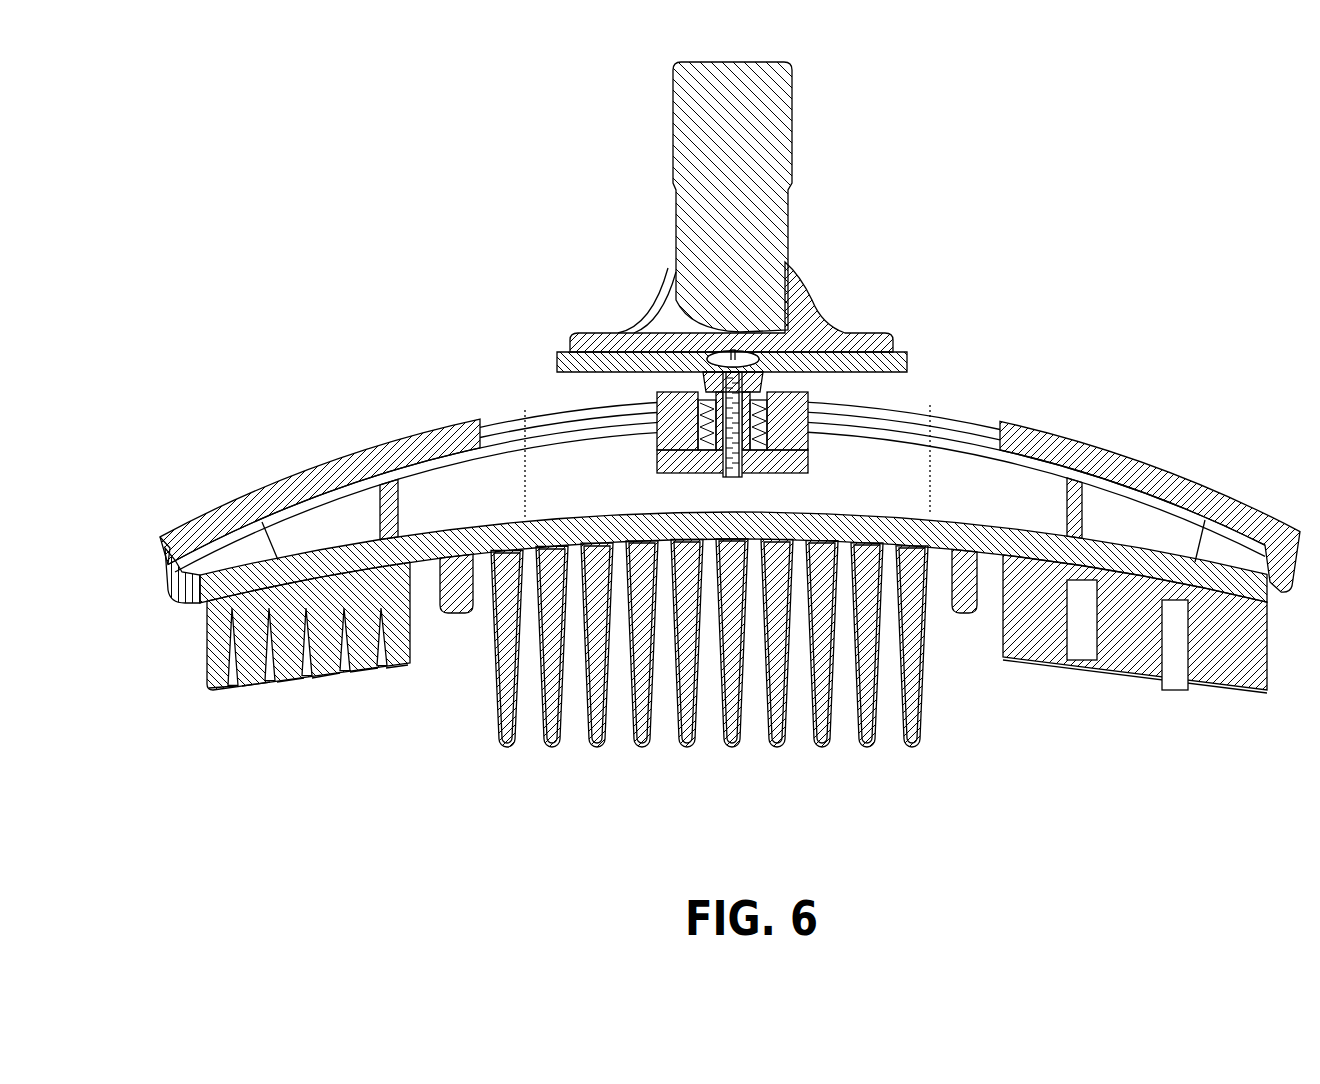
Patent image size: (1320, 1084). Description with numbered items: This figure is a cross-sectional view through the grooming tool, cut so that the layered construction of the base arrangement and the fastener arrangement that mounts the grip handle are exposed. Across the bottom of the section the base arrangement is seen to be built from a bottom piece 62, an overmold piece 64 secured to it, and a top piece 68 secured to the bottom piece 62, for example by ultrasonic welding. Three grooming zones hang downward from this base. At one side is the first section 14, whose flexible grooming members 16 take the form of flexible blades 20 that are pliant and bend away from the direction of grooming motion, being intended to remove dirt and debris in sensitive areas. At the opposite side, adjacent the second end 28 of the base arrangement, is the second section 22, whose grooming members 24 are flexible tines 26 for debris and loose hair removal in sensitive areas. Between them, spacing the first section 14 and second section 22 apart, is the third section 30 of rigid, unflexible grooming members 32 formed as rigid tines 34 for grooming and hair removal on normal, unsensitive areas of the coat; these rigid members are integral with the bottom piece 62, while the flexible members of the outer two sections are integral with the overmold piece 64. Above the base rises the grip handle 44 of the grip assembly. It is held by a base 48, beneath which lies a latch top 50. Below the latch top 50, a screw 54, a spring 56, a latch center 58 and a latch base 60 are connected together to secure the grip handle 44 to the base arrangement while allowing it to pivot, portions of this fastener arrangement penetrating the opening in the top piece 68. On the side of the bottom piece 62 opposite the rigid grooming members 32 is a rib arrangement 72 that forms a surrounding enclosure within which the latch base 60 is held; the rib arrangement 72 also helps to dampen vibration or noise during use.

The first section 14 is at (1145, 687).
The grooming members 16 is at (1045, 672).
The flexible blades 20 is at (1049, 661).
The second section 22 is at (320, 709).
The grooming members 24 is at (218, 692).
The flexible tines 26 is at (404, 672).
The second end 28 is at (160, 540).
The third section 30 is at (713, 689).
The grooming members 32 is at (777, 748).
The rigid tines 34 is at (867, 748).
The grip handle 44 is at (683, 143).
The base 48 is at (868, 333).
The latch top 50 is at (912, 357).
The screw 54 is at (741, 478).
The spring 56 is at (706, 410).
The latch center 58 is at (782, 420).
The latch base 60 is at (735, 427).
The bottom piece 62 is at (340, 548).
The overmold piece 64 is at (180, 597).
The top piece 68 is at (1165, 470).
The rib arrangement 72 is at (405, 500).